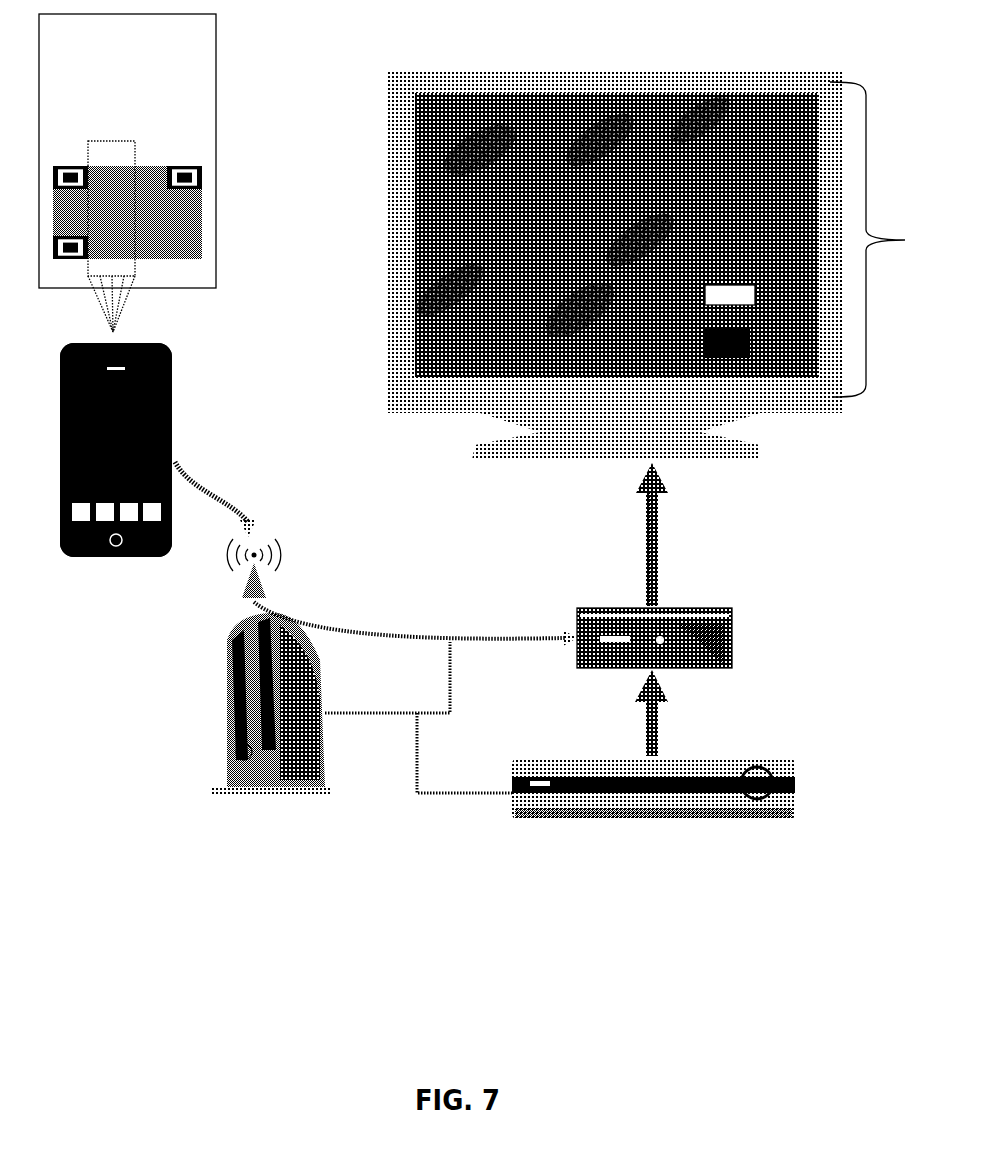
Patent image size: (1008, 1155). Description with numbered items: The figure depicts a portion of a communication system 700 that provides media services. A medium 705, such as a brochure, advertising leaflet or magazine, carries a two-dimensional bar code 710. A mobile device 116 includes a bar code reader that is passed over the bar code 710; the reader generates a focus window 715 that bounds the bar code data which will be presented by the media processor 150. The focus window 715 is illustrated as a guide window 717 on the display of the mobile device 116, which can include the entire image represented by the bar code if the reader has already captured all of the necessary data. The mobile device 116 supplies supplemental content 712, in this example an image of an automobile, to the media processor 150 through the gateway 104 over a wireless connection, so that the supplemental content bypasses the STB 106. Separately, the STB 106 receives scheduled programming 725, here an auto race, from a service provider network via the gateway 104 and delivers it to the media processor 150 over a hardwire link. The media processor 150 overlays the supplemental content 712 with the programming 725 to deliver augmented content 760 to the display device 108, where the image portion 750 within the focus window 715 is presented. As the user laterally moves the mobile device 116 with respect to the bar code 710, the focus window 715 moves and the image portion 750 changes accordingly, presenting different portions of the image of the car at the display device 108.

The communication system 700 is at (478, 1053).
The medium 705 is at (216, 110).
The two-dimensional bar code 710 is at (200, 230).
The focus window 715 is at (115, 138).
The mobile device 116 is at (135, 426).
The supplemental content 712 is at (158, 410).
The guide window 717 is at (78, 477).
The display device 108 is at (621, 256).
The scheduled programming 725 is at (417, 272).
The image portion 750 is at (728, 380).
The augmented content 760 is at (877, 239).
The media processor 150 is at (732, 647).
The STB 106 is at (692, 820).
The gateway 104 is at (262, 773).